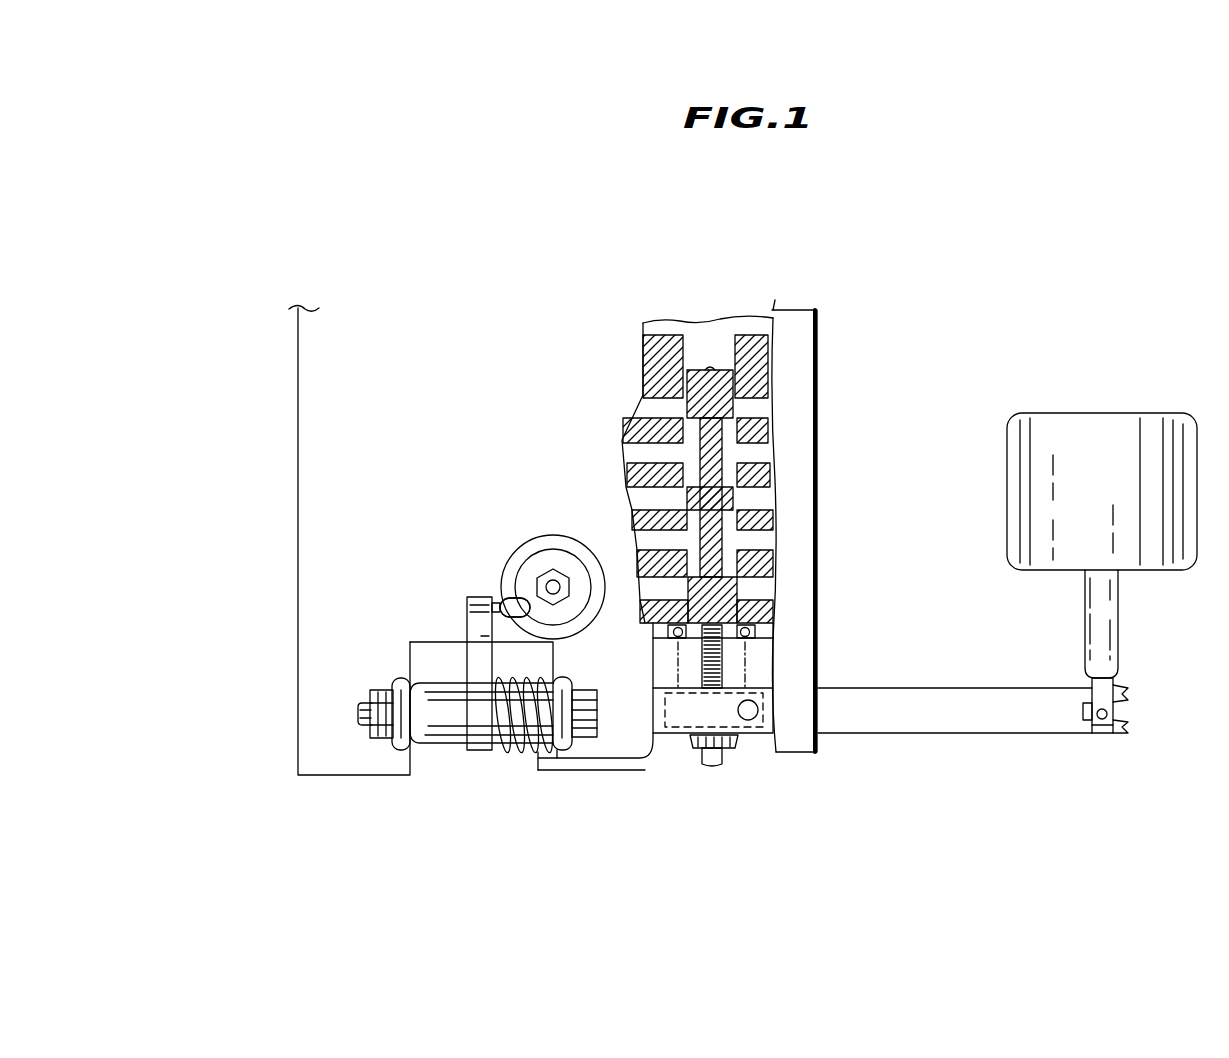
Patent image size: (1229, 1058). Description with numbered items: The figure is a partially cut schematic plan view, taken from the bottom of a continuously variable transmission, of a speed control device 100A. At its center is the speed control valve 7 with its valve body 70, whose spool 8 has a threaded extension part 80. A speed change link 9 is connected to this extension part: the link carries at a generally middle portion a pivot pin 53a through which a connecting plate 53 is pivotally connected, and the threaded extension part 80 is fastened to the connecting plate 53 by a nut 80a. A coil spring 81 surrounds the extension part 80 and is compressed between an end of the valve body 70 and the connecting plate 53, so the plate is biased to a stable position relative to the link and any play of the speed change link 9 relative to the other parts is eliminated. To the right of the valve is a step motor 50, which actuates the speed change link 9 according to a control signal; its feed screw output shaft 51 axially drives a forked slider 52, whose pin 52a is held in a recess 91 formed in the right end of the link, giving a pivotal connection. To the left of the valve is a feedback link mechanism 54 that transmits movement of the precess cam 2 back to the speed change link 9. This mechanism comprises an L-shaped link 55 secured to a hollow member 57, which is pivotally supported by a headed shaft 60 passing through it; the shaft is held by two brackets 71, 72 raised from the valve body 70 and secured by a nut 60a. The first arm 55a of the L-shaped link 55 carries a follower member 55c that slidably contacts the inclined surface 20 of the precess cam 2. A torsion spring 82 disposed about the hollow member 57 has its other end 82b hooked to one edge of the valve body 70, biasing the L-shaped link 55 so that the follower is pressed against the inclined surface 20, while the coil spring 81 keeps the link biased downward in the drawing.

The speed control device 100A is at (1008, 219).
The valve body 70 is at (297, 372).
The speed control valve 7 is at (703, 392).
The spool 8 is at (722, 497).
The connecting plate 53 is at (745, 745).
The pivot pin 53a is at (750, 722).
The coil spring 81 is at (676, 637).
The extension part 80 is at (703, 668).
The nut 80a is at (730, 743).
The speed change link 9 is at (967, 718).
The step motor 50 is at (1082, 450).
The feed screw output shaft 51 is at (1110, 615).
The forked slider 52 is at (1106, 690).
The recess 91 is at (1118, 726).
The pin 52a is at (1103, 735).
The hollow member 57 is at (440, 683).
The L-shaped link 55 is at (465, 591).
The first arm 55a is at (477, 668).
The inclined surface 20 is at (500, 585).
The follower member 55c is at (520, 596).
The precess cam 2 is at (552, 536).
The feedback link mechanism 54 is at (446, 752).
The bracket 71 is at (400, 748).
The headed shaft 60 is at (358, 715).
The nut 60a is at (377, 733).
The torsion spring 82 is at (512, 757).
The bracket 72 is at (559, 758).
The other end 82b is at (577, 768).